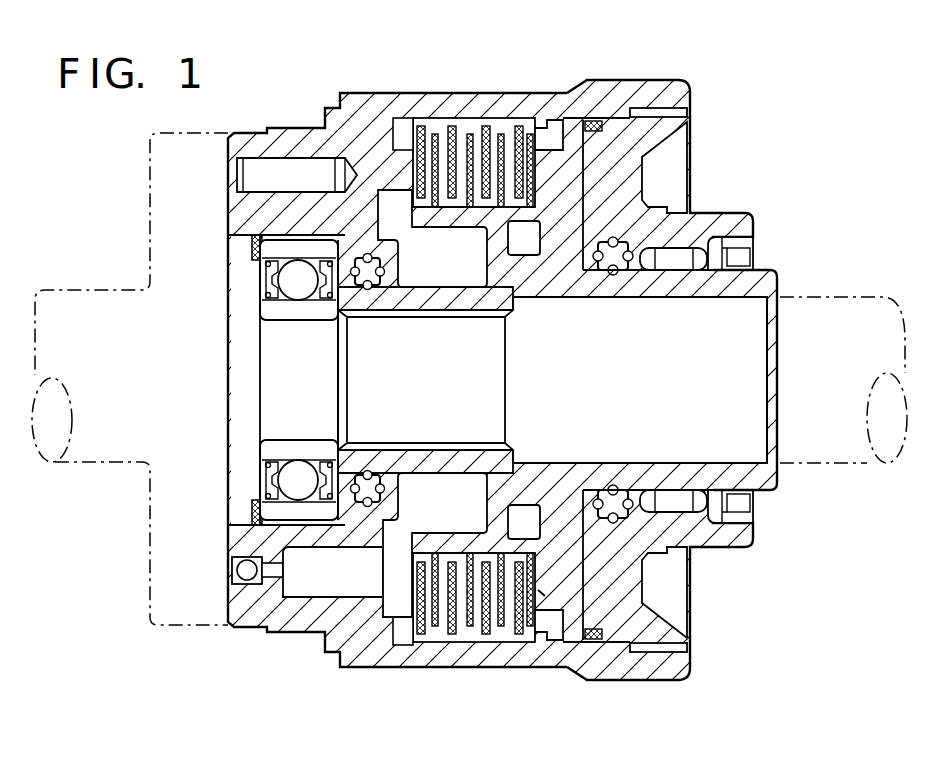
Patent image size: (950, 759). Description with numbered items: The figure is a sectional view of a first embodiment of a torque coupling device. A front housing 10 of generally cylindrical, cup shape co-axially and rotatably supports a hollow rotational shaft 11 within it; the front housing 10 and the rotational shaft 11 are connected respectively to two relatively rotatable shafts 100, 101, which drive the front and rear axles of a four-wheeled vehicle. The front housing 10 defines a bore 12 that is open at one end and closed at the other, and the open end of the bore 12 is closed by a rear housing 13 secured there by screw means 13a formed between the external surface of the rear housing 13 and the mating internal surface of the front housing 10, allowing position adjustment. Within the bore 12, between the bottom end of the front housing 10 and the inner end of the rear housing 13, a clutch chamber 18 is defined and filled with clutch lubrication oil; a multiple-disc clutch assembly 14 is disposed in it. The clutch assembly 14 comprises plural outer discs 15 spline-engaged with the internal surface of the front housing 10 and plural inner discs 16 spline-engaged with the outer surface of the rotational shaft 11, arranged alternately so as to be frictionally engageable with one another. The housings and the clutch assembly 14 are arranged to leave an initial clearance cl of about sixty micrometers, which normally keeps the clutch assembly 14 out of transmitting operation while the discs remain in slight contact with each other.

The front housing 10 is at (361, 108).
The rotational shaft 11 is at (757, 478).
The bore 12 is at (553, 125).
The rear housing 13 is at (625, 178).
The screw means 13a is at (680, 110).
The multiple-disc clutch assembly 14 is at (470, 126).
The outer discs 15 is at (495, 622).
The inner discs 16 is at (458, 555).
The clutch chamber 18 is at (400, 550).
The relatively rotatable shaft 100 is at (81, 464).
The relatively rotatable shaft 101 is at (850, 297).
The initial clearance cl is at (541, 595).